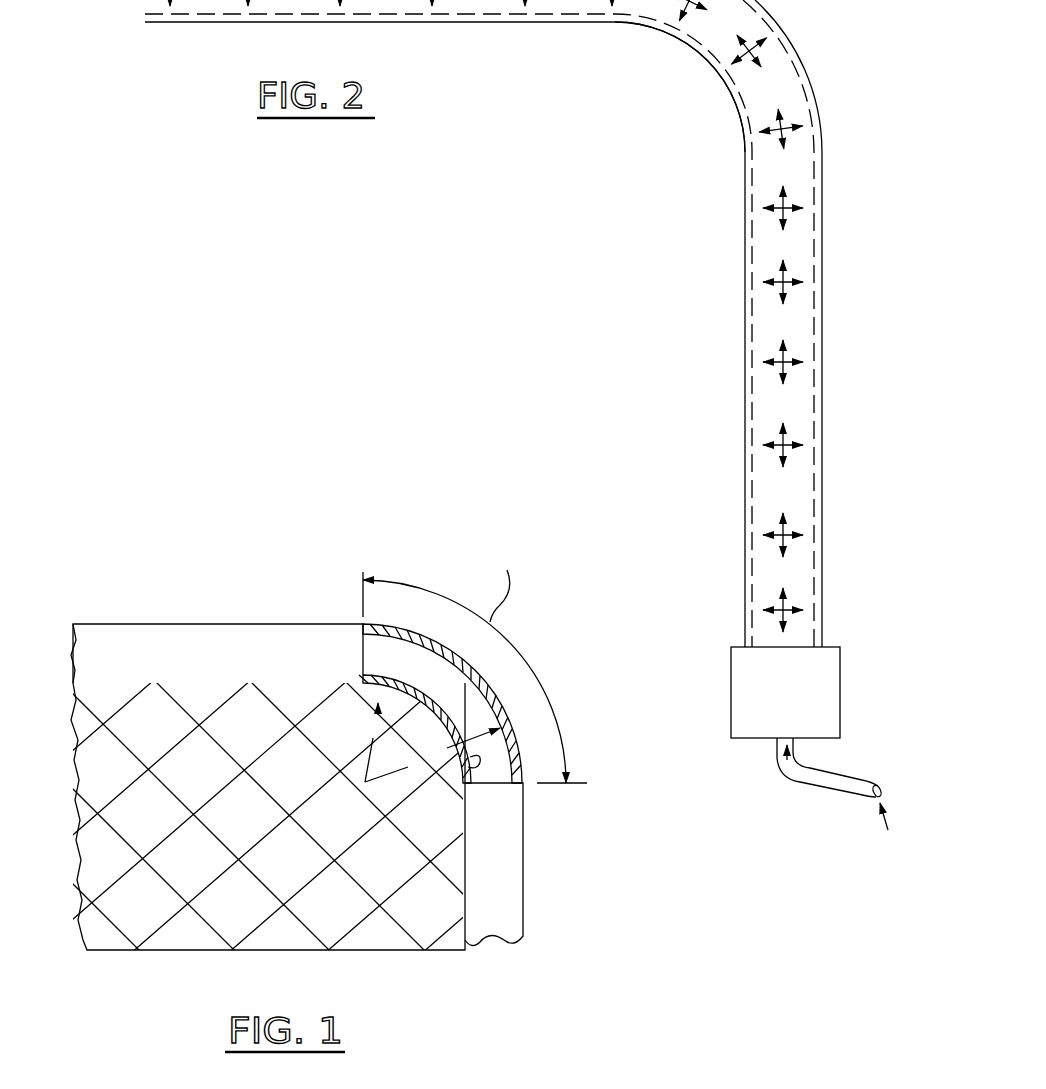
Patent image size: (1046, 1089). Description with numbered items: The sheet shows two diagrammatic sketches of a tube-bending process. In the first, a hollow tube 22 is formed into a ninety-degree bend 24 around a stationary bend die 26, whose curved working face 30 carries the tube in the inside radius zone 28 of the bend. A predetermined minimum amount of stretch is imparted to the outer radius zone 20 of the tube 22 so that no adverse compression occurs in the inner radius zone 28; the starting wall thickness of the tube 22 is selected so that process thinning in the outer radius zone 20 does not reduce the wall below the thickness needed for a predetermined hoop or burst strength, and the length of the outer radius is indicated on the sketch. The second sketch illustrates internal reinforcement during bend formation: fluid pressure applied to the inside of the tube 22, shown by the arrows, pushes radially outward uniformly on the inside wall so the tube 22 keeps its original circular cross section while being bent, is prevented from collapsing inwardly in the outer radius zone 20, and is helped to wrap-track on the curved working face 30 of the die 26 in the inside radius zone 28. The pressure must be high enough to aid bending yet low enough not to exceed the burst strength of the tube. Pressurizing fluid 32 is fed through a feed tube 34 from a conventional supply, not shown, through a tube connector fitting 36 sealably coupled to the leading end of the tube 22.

In FIG. 1, the outer radius zone 20 is at (506, 700).
In FIG. 2, the hollow tube 22 is at (522, 26).
In FIG. 1, the hollow tube 22 is at (253, 655).
In FIG. 1, the bend 24 is at (448, 680).
In FIG. 1, the stationary bend die 26 is at (388, 955).
In FIG. 2, the inner radius zone 28 is at (690, 54).
In FIG. 1, the inner radius zone 28 is at (427, 711).
In FIG. 1, the curved working face 30 is at (463, 782).
In FIG. 2, the pressurizing fluid 32 is at (787, 763).
In FIG. 2, the feed tube 34 is at (830, 785).
In FIG. 2, the tube connector fitting 36 is at (731, 676).